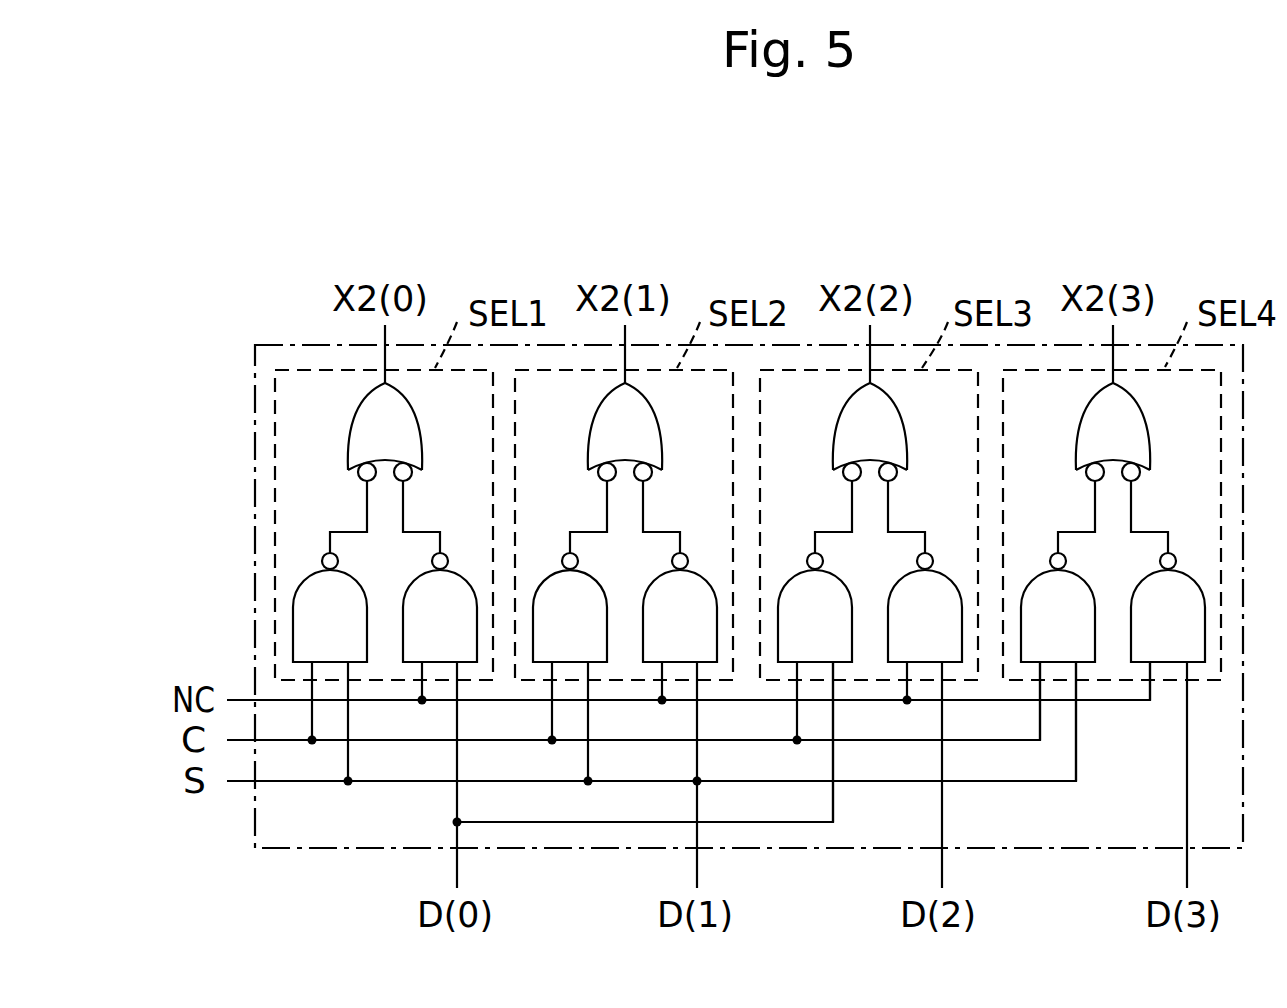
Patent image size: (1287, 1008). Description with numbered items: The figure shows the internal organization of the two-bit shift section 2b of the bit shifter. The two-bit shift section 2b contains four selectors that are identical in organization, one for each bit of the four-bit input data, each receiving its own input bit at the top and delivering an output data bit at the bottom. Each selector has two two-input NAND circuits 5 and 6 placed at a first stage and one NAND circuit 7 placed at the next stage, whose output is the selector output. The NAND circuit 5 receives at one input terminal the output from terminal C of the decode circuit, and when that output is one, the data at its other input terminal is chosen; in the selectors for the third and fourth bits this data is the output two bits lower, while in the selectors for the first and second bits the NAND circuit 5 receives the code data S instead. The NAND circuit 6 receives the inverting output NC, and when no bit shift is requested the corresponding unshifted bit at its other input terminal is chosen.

The 2-bit shift section 2b is at (285, 345).
The NAND circuit 5 is at (307, 587).
The NAND circuit 6 is at (470, 587).
The NAND circuit 7 is at (413, 422).